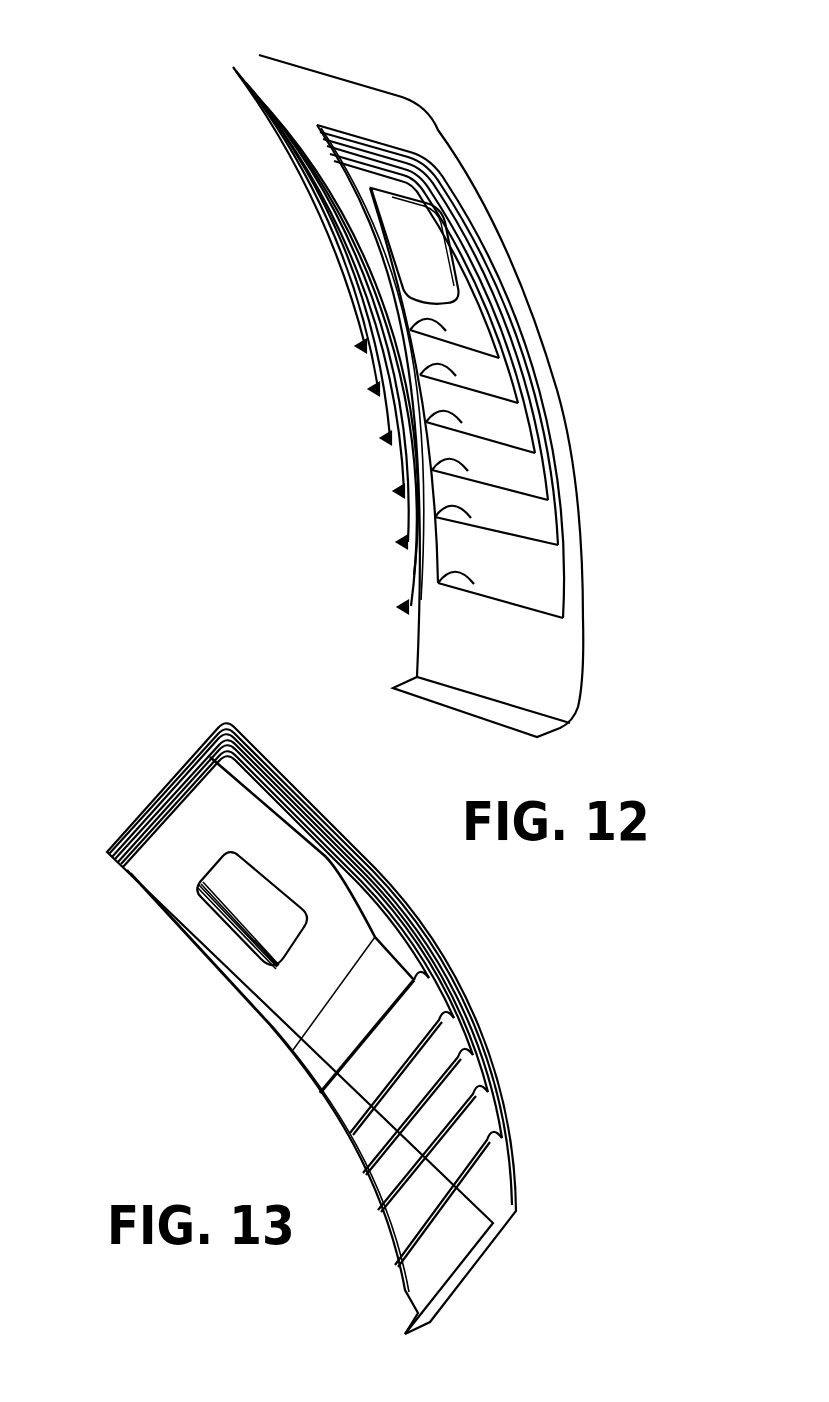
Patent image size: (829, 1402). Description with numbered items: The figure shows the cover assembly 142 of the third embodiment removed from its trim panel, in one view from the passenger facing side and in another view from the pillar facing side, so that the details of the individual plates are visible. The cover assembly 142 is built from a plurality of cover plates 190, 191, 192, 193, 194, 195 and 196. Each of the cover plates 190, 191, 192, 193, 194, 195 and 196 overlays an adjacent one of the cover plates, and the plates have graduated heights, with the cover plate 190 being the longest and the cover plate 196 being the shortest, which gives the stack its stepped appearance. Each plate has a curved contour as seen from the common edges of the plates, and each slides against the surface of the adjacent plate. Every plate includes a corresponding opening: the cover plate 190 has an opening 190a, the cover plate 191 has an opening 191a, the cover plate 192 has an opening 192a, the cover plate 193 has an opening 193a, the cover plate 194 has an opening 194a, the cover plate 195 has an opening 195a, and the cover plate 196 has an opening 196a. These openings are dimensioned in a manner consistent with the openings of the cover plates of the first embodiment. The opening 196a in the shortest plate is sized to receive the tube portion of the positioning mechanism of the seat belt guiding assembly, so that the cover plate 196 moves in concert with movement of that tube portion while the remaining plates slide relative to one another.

In FIG. 12, the cover assembly 142 is at (244, 190).
In FIG. 13, the cover assembly 142 is at (187, 684).
In FIG. 12, the cover plate 190 is at (557, 662).
In FIG. 13, the cover plate 190 is at (480, 1204).
In FIG. 12, the cover plate 191 is at (548, 592).
In FIG. 13, the cover plate 191 is at (463, 1138).
In FIG. 12, the cover plate 192 is at (543, 530).
In FIG. 13, the cover plate 192 is at (450, 1097).
In FIG. 12, the cover plate 193 is at (532, 482).
In FIG. 13, the cover plate 193 is at (427, 1058).
In FIG. 12, the cover plate 194 is at (518, 434).
In FIG. 13, the cover plate 194 is at (398, 1022).
In FIG. 12, the cover plate 195 is at (504, 382).
In FIG. 13, the cover plate 195 is at (375, 977).
In FIG. 12, the cover plate 196 is at (472, 332).
In FIG. 13, the cover plate 196 is at (343, 928).
In FIG. 12, the opening 190a is at (408, 596).
In FIG. 12, the opening 191a is at (404, 538).
In FIG. 12, the opening 192a is at (400, 488).
In FIG. 12, the opening 193a is at (388, 437).
In FIG. 12, the opening 194a is at (376, 387).
In FIG. 12, the opening 195a is at (363, 343).
In FIG. 12, the opening 196a is at (432, 232).
In FIG. 13, the opening 196a is at (250, 858).